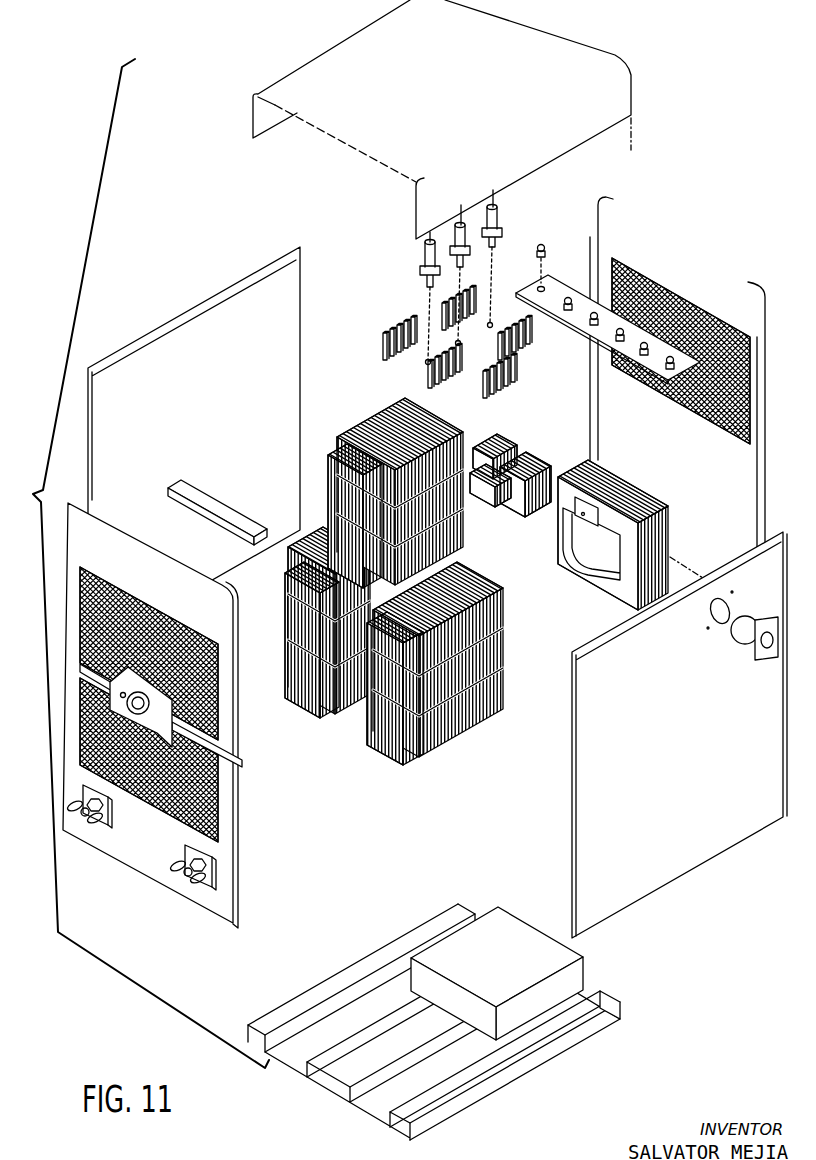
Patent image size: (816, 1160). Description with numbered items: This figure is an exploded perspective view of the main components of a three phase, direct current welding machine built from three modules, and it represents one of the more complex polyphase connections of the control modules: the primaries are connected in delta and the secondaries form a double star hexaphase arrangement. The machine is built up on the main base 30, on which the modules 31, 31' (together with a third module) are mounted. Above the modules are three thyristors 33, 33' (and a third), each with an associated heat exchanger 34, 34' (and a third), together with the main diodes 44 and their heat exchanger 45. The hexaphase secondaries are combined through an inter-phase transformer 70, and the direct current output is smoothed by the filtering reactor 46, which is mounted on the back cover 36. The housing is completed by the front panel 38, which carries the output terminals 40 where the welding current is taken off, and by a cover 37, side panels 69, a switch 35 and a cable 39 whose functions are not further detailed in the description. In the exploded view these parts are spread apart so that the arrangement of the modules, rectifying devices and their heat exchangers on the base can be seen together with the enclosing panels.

The main base 30 is at (434, 1022).
The module 31 is at (314, 604).
The module 31' is at (394, 479).
The thyristor 33 is at (405, 298).
The thyristor 33' is at (424, 272).
The heat exchanger 34 is at (378, 334).
The heat exchanger 34' is at (482, 350).
The switch 35 is at (744, 642).
The back cover 36 is at (673, 387).
The top cover 37 is at (442, 119).
The front panel 38 is at (149, 715).
The cable 39 is at (242, 762).
The output terminals 40 is at (82, 820).
The main diodes 44 is at (549, 244).
The heat exchanger 45 is at (558, 296).
The filtering reactor 46 is at (543, 730).
The side panel 69 is at (437, 592).
The inter-phase transformer 70 is at (505, 503).